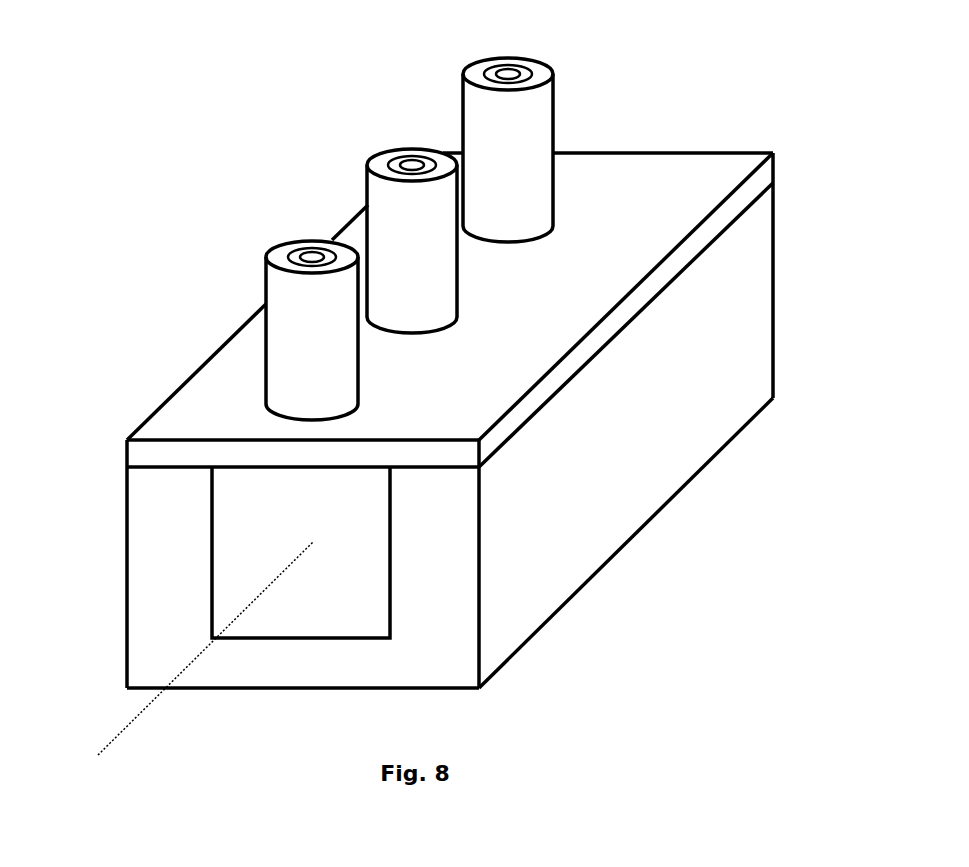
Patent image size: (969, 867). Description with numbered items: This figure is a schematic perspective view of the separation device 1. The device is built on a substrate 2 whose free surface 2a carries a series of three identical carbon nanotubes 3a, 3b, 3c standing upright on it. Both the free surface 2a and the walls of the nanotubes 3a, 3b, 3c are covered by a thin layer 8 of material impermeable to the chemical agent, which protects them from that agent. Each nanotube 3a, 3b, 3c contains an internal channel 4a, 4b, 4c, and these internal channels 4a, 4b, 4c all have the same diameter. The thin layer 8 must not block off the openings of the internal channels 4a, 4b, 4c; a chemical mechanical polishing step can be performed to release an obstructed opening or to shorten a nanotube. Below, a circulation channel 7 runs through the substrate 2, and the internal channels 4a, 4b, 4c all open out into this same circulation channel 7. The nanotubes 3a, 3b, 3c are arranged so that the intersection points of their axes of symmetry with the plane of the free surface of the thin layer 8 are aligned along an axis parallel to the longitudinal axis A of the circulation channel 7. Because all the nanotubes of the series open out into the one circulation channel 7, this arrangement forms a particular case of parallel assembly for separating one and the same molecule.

The separation device 1 is at (464, 345).
The substrate 2 is at (482, 422).
The free surface of substrate 2a is at (775, 227).
The carbon nanotube 3a is at (275, 303).
The carbon nanotube 3b is at (375, 212).
The carbon nanotube 3c is at (471, 122).
The internal channel 4a is at (311, 253).
The internal channel 4b is at (412, 165).
The internal channel 4c is at (509, 70).
The circulation channel 7 is at (263, 563).
The thin layer 8 is at (665, 178).
The longitudinal axis of circulation channel A is at (140, 713).